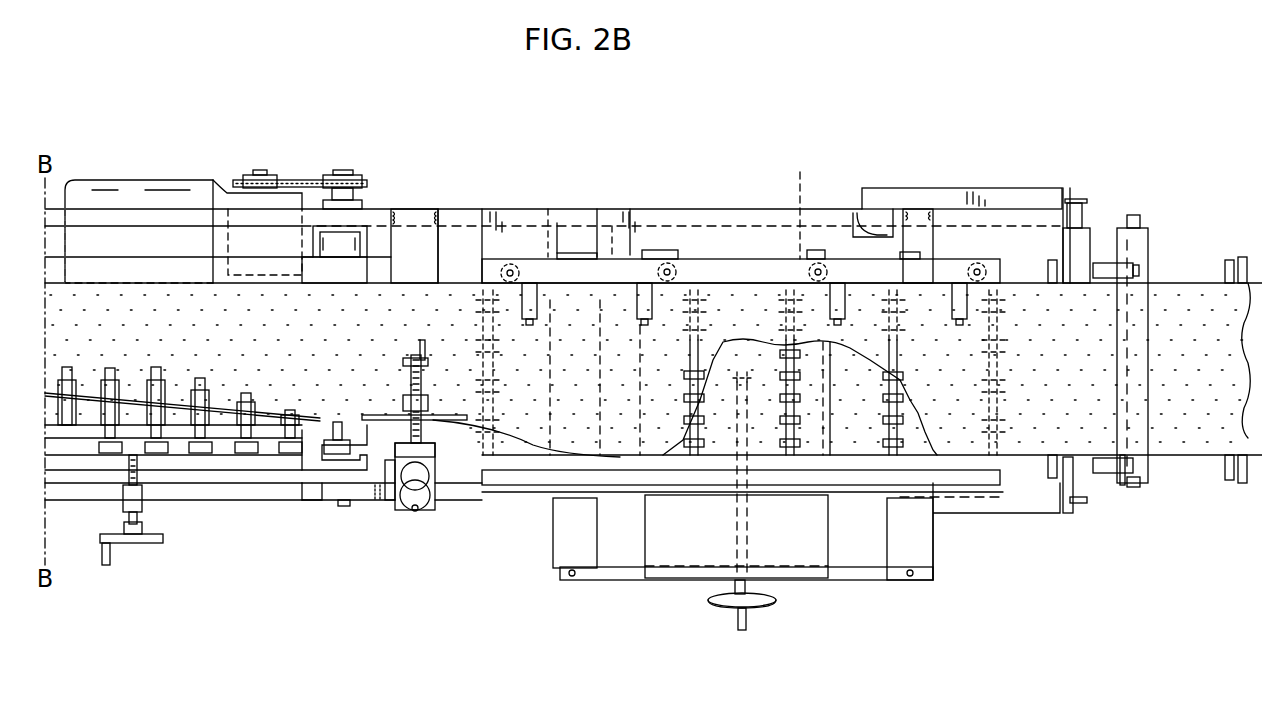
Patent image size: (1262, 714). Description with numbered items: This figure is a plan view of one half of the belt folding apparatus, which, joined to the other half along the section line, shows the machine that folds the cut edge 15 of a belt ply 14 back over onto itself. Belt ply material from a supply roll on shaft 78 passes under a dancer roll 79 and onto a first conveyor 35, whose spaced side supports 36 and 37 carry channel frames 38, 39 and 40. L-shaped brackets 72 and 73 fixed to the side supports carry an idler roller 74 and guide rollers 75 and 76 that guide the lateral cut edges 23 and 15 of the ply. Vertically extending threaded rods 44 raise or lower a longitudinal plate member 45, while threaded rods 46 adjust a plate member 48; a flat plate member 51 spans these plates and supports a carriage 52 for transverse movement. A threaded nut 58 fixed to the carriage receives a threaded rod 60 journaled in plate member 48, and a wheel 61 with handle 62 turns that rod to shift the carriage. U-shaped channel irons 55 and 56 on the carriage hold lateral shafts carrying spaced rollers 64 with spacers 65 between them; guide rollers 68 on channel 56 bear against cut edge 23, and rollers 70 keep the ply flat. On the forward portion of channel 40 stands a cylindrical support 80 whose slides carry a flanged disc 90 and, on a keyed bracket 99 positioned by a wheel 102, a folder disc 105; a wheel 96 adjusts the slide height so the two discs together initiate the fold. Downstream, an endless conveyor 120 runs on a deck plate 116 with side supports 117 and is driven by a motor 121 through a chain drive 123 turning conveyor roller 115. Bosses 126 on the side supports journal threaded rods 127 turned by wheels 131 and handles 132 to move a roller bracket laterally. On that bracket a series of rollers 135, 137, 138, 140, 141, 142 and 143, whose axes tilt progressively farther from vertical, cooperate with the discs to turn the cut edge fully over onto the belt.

The belt ply 14 is at (1031, 262).
The cut edge 15 is at (1052, 500).
The cut end 23 is at (462, 280).
The first conveyor 35 is at (747, 174).
The side support 36 is at (615, 500).
The side support 37 is at (629, 222).
The channel frame 38 is at (866, 233).
The channel frame 39 is at (581, 240).
The channel frame 40 is at (415, 233).
The threaded rod 44 is at (553, 254).
The plate member 45 is at (624, 254).
The threaded rod 46 is at (572, 578).
The plate member 48 is at (620, 584).
The flat plate member 51 is at (795, 548).
The carriage 52 is at (765, 470).
The U-shaped channel iron 55 is at (527, 482).
The U-shaped channel iron 56 is at (722, 265).
The threaded nut 58 is at (758, 370).
The threaded rod 60 is at (735, 540).
The wheel 61 is at (745, 602).
The handle 62 is at (744, 630).
The roller 64 is at (508, 381).
The spacer 65 is at (803, 392).
The guide roller 68 is at (522, 337).
The roller 70 is at (530, 311).
The L-shaped bracket 72 is at (1010, 195).
The L-shaped bracket 73 is at (1010, 513).
The idler roller 74 is at (1092, 238).
The guide roller 75 is at (1120, 264).
The guide roller 76 is at (1105, 476).
The shaft 78 is at (1230, 257).
The dancer roll 79 is at (1144, 452).
The cylindrical support 80 is at (435, 457).
The flanged disc 90 is at (388, 487).
The wheel 96 is at (409, 506).
The bracket 99 is at (401, 398).
The wheel 102 is at (406, 355).
The folder disc 105 is at (448, 408).
The roller 115 is at (357, 246).
The deck plate 116 is at (242, 232).
The side support 117 is at (237, 500).
The endless conveyor 120 is at (118, 270).
The motor 121 is at (160, 193).
The chain drive 123 is at (306, 181).
The boss 126 is at (142, 507).
The threaded rod 127 is at (128, 539).
The wheel 131 is at (124, 543).
The handle 132 is at (103, 556).
The roller 135 is at (308, 475).
The roller 137 is at (317, 424).
The roller 138 is at (242, 395).
The roller 140 is at (212, 388).
The roller 141 is at (158, 375).
The roller 142 is at (110, 380).
The roller 143 is at (76, 368).